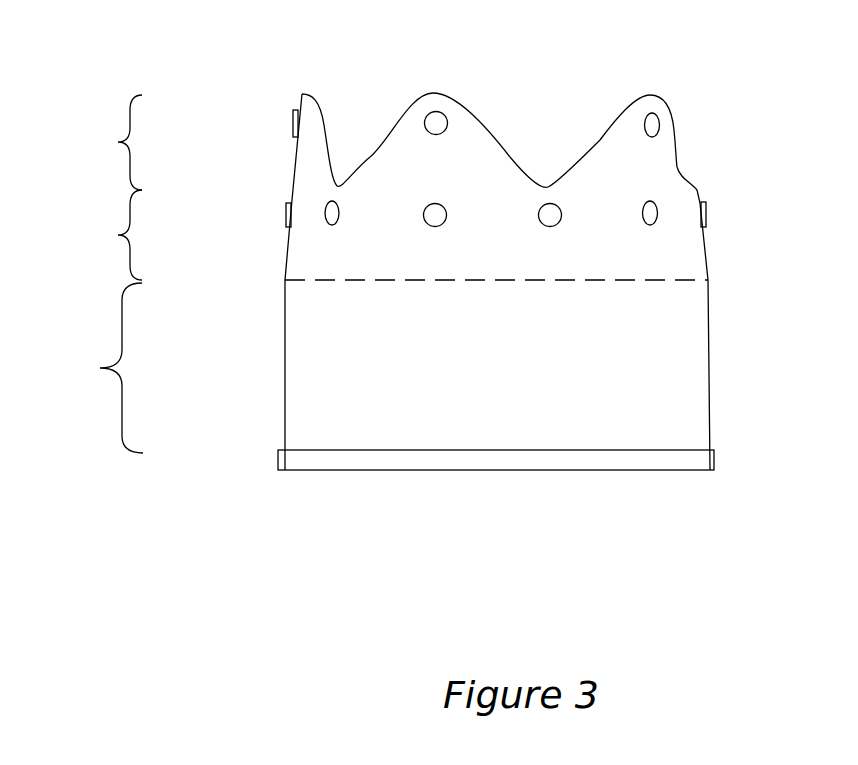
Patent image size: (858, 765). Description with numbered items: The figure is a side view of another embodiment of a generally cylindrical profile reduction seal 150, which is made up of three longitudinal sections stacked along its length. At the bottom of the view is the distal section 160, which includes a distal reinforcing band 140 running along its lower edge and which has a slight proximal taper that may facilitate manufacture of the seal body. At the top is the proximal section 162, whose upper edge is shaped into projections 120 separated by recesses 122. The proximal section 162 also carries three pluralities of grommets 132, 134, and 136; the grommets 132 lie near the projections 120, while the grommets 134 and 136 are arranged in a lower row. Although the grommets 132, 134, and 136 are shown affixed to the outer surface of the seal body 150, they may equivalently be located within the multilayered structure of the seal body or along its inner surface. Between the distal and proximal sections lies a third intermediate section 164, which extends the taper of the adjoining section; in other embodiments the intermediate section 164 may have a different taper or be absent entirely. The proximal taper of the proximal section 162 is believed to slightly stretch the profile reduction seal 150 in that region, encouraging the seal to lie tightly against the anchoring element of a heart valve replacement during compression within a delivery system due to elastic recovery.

The projections 120 is at (433, 93).
The recesses 122 is at (338, 183).
The grommets 132 is at (293, 122).
The grommets 134 is at (562, 217).
The grommets 136 is at (425, 216).
The distal reinforcing band 140 is at (653, 460).
The profile reduction seal 150 is at (687, 380).
The distal section 160 is at (99, 368).
The proximal section 162 is at (107, 142).
The intermediate section 164 is at (107, 235).